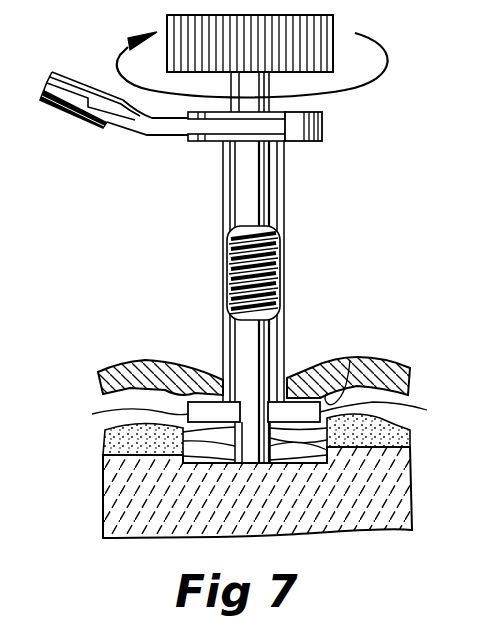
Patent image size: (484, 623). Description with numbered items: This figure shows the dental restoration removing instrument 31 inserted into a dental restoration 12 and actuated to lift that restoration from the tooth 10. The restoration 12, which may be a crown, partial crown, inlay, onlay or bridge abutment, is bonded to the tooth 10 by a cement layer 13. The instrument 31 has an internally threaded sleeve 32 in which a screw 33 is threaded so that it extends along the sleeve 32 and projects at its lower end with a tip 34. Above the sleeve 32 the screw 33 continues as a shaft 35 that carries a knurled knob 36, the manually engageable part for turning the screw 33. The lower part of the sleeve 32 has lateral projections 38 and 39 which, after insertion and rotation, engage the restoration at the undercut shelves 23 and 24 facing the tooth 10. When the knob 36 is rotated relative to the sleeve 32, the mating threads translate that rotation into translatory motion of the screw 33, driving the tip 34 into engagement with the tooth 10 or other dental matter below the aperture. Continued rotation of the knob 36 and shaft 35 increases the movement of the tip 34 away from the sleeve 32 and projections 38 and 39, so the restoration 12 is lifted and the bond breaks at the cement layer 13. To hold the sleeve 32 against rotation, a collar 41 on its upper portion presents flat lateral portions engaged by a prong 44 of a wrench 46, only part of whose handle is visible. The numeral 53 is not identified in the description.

The tooth 10 is at (103, 491).
The dental restoration 12 is at (410, 365).
The cement layer 13 is at (103, 446).
The shelf 23 is at (350, 360).
The shelf 24 is at (186, 393).
The dental restoration removing instrument 31 is at (202, 202).
The internally threaded sleeve 32 is at (284, 203).
The screw 33 is at (280, 275).
The tip 34 is at (285, 442).
The shaft 35 is at (258, 101).
The knurled knob 36 is at (333, 25).
The lateral projection 38 is at (188, 405).
The lateral projection 39 is at (279, 412).
The collar 41 is at (322, 141).
The prong 44 is at (152, 136).
The wrench 46 is at (75, 78).
The assembly 53 is at (469, 330).